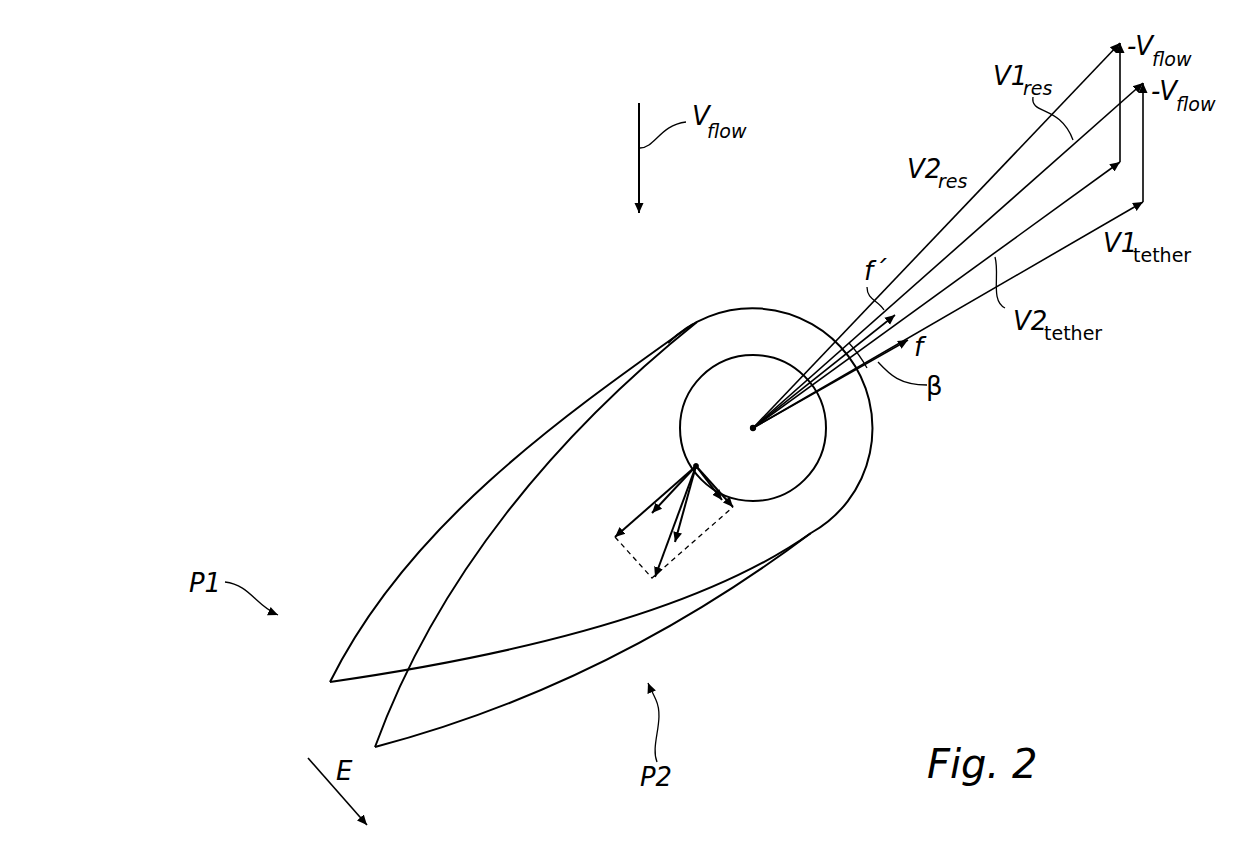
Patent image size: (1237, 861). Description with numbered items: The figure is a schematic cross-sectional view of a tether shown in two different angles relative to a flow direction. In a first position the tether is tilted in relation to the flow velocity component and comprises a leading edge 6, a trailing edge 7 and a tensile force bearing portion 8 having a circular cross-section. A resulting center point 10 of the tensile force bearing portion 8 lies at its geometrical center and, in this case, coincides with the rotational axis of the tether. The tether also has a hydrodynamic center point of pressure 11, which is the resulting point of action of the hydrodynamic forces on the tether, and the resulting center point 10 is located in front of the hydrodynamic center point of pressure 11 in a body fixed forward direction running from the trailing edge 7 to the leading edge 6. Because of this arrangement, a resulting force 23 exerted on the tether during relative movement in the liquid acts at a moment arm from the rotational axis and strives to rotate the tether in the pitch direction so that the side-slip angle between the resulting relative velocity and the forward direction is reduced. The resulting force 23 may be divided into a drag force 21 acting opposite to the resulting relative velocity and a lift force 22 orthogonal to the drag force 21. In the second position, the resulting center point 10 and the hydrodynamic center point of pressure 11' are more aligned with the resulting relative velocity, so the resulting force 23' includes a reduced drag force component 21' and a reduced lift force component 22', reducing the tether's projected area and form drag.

The leading edge 6 is at (807, 282).
The trailing edge 7 is at (313, 692).
The tensile force bearing portion 8 is at (803, 428).
The resulting center point 10 is at (757, 414).
The hydrodynamic center point of pressure 11 is at (655, 380).
The hydrodynamic center point of pressure 11' is at (812, 486).
The drag force 21 is at (559, 490).
The lift force 22 is at (786, 506).
The resulting force 23 is at (604, 481).
The reduced drag force component 21' is at (741, 573).
The reduced lift force component 22' is at (770, 532).
The resulting force 23' is at (775, 551).